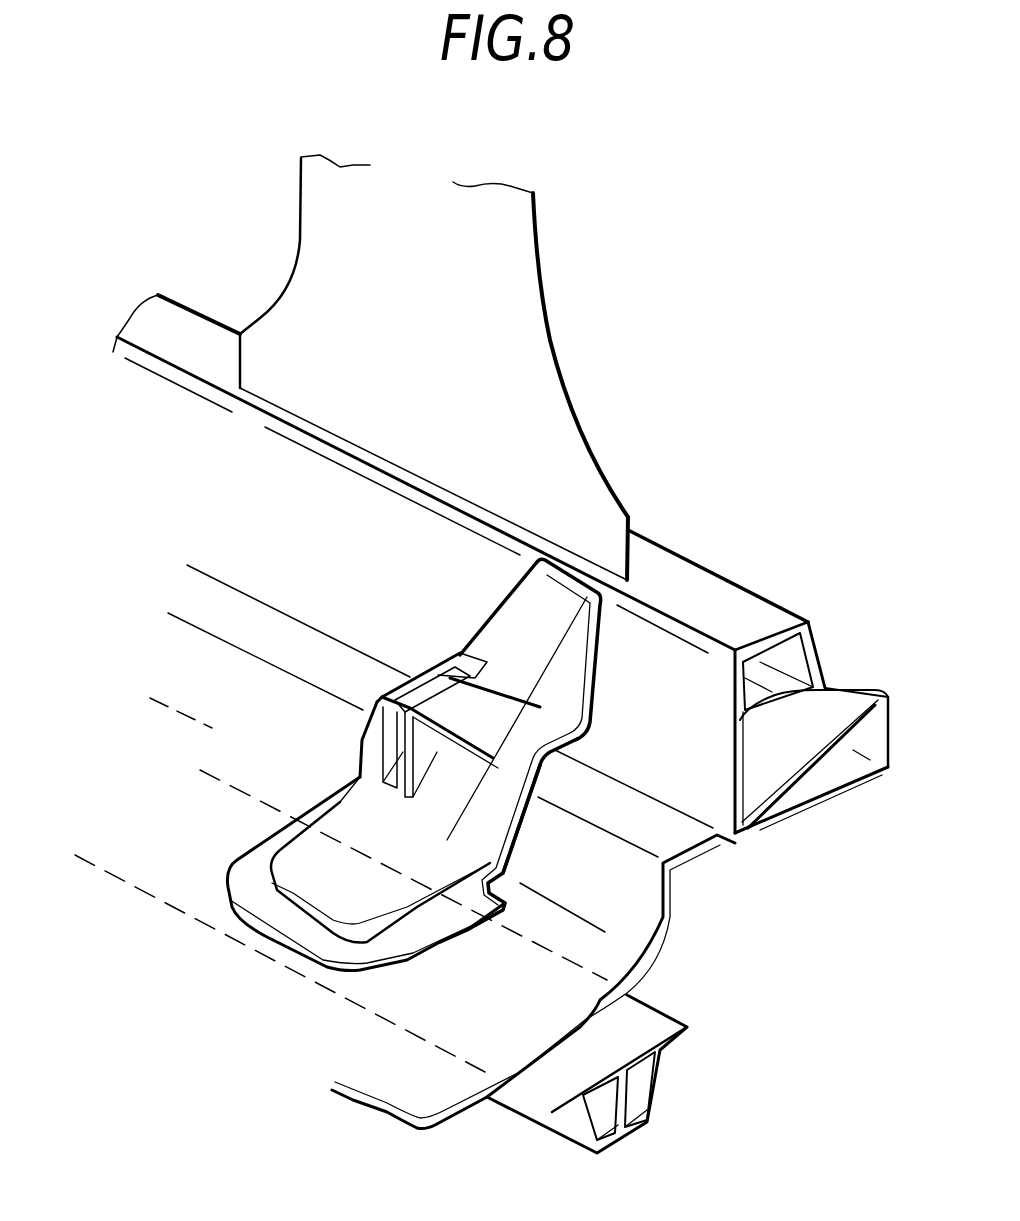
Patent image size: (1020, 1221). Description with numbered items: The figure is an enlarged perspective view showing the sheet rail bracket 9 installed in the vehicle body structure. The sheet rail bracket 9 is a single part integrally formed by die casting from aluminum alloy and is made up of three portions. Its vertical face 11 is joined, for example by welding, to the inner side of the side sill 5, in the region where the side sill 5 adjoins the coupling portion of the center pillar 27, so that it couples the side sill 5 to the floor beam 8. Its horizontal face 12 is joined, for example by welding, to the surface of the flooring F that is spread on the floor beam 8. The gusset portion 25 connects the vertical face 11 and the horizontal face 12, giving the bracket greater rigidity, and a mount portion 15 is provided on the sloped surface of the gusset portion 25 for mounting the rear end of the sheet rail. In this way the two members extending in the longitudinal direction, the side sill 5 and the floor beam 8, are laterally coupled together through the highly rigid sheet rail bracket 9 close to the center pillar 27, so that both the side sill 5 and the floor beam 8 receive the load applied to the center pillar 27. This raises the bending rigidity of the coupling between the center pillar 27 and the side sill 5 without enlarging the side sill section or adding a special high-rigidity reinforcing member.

The center pillar 27 is at (540, 345).
The side sill 5 is at (737, 587).
The vertical face 11 is at (598, 637).
The gusset portion 25 is at (487, 830).
The mount portion 15 is at (458, 654).
The sheet rail bracket 9 is at (348, 737).
The horizontal face 12 is at (253, 928).
The floor beam 8 is at (652, 1017).
The flooring F is at (387, 1098).